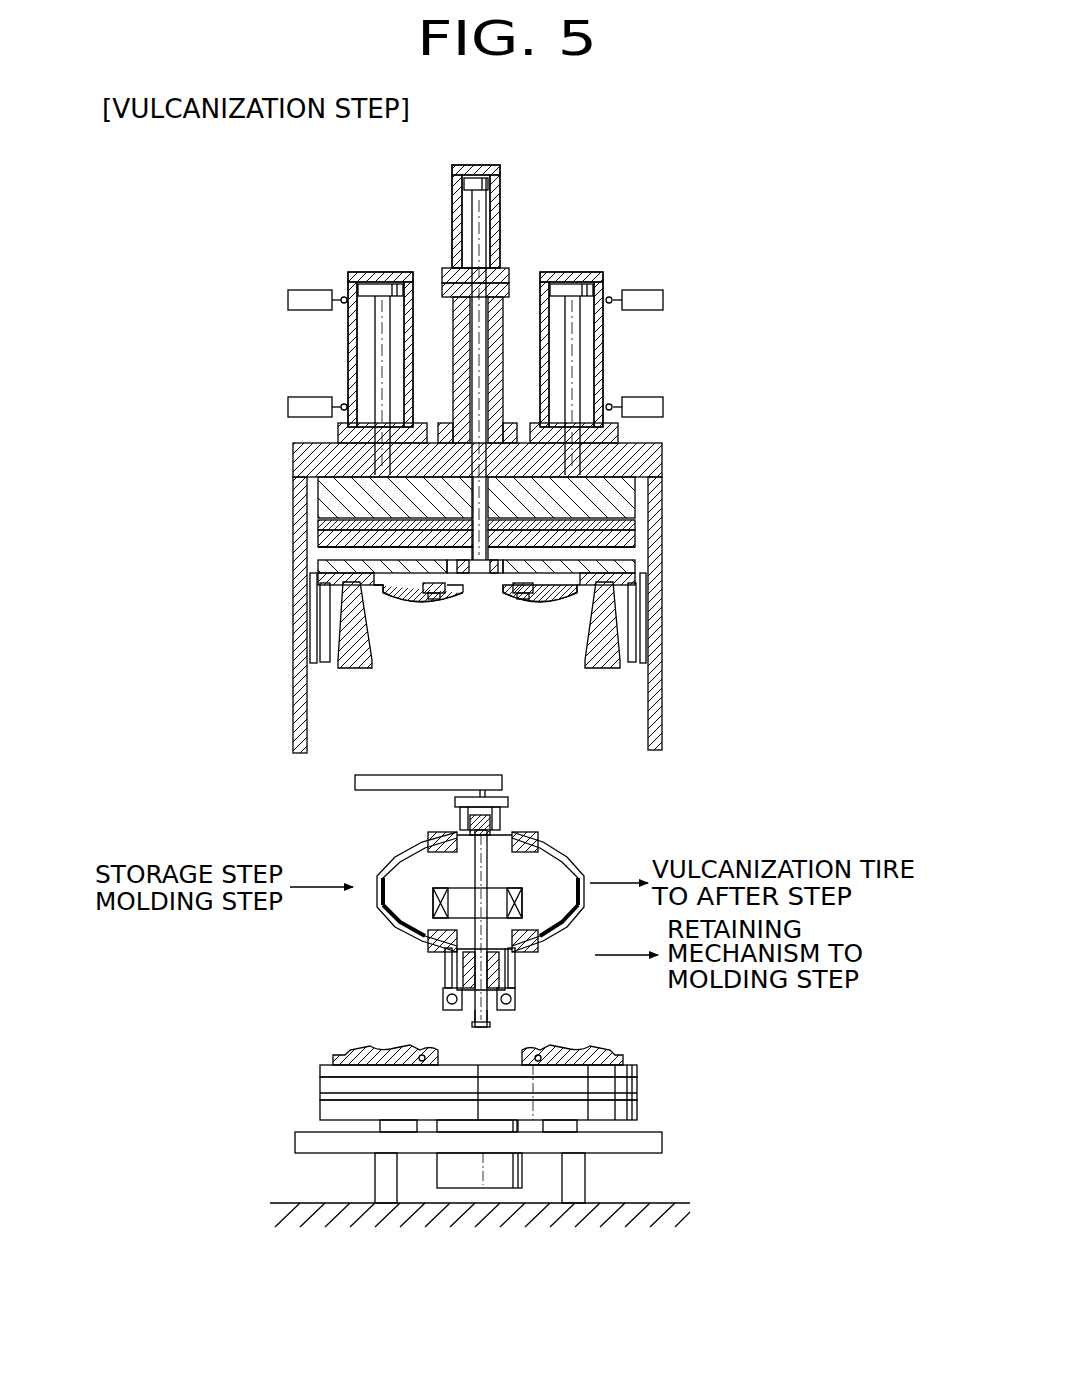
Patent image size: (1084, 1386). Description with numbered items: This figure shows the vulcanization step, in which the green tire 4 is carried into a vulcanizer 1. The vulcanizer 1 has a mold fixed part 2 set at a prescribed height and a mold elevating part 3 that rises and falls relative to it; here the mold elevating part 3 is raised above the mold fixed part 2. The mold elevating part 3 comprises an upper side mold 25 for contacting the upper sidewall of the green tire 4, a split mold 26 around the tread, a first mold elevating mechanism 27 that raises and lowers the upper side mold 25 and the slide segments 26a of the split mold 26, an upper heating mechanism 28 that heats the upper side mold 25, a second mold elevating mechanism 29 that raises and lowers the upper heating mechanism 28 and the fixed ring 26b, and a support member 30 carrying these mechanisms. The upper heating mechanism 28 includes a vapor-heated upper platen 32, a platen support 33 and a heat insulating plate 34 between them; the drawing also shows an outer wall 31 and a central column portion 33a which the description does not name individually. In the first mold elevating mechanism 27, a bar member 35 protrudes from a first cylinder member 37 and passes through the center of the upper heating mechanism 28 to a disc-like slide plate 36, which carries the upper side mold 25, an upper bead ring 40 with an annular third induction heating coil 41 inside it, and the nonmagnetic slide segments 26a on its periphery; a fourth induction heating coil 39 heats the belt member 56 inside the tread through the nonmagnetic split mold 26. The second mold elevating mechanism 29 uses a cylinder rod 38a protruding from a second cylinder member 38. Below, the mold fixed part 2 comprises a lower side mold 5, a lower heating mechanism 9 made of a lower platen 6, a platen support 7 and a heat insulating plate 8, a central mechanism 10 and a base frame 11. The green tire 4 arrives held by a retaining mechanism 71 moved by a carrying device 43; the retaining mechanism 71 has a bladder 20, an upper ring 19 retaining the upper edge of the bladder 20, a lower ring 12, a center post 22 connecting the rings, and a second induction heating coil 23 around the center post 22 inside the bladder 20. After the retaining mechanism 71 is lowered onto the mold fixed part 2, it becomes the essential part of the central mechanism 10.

The vulcanizer 1 is at (697, 265).
The mold fixed part 2 is at (645, 1062).
The mold elevating part 3 is at (633, 258).
The green tire 4 is at (400, 855).
The lower side mold 5 is at (550, 1052).
The lower platen 6 is at (637, 1078).
The platen support 7 is at (637, 1108).
The heat insulating plate 8 is at (637, 1093).
The lower heating mechanism 9 is at (707, 1062).
The central mechanism 10 is at (495, 1175).
The base frame 11 is at (630, 1145).
The lower ring 12 is at (530, 952).
The upper ring 19 is at (520, 818).
The bladder 20 is at (560, 848).
The center post 22 is at (488, 870).
The second induction heating coil 23 is at (460, 897).
The upper side mold 25 is at (553, 590).
The split mold 26 is at (742, 610).
The slide segment 26a is at (600, 640).
The fixed ring 26b is at (632, 615).
The first mold elevating mechanism 27 is at (508, 185).
The upper heating mechanism 28 is at (731, 488).
The second mold elevating mechanism 29 is at (251, 320).
The support member 30 is at (663, 458).
The outer ring / container wall 31 is at (663, 722).
The upper platen 32 is at (636, 540).
The platen support 33 is at (636, 492).
The central column 33a is at (458, 332).
The insulating plate 34 is at (636, 520).
The bar member 35 is at (483, 336).
The slide plate 36 is at (636, 570).
The first cylinder member 37 is at (500, 230).
The second cylinder member 38 is at (350, 326).
The cylinder rod 38a is at (372, 367).
The fourth induction heating coil 39 is at (312, 615).
The upper bead ring 40 is at (435, 592).
The third induction heating coil 41 is at (522, 598).
The carrying device 43 is at (432, 775).
The belt member 56 is at (388, 900).
The retaining mechanism 71 is at (420, 960).